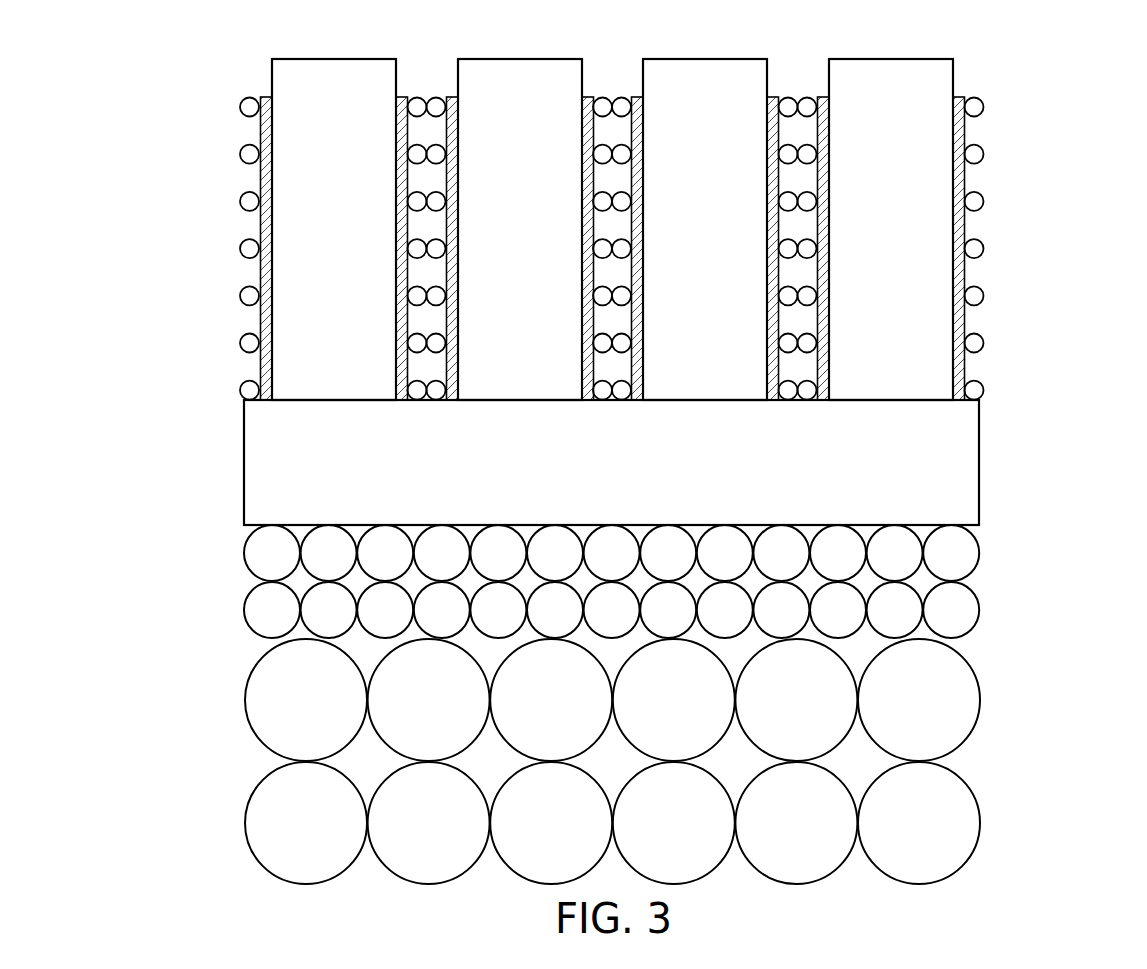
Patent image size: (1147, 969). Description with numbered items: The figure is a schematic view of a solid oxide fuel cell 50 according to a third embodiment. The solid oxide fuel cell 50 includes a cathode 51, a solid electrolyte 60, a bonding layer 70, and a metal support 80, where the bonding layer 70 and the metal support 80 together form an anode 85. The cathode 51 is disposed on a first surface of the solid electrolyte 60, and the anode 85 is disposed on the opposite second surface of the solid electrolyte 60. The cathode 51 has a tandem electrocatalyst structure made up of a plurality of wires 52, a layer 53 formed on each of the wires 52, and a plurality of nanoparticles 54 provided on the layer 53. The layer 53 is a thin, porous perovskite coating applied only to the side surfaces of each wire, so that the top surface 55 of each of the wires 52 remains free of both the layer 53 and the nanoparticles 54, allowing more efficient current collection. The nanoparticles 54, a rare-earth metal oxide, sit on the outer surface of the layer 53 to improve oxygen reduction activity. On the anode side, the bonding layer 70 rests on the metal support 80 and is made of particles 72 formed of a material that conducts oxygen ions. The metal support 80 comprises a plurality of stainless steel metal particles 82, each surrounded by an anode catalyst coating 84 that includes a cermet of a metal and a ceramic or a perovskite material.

The solid oxide fuel cell 50 is at (156, 145).
The cathode 51 is at (1015, 97).
The wires 52 is at (327, 230).
The layer 53 is at (267, 323).
The nanoparticles 54 is at (240, 107).
The top surface 55 is at (334, 59).
The solid electrolyte 60 is at (979, 462).
The bonding layer 70 is at (1015, 540).
The particles 72 is at (267, 556).
The metal support 80 is at (1015, 660).
The metal particles 82 is at (294, 830).
The anode catalyst coating 84 is at (245, 723).
The anode 85 is at (1082, 645).